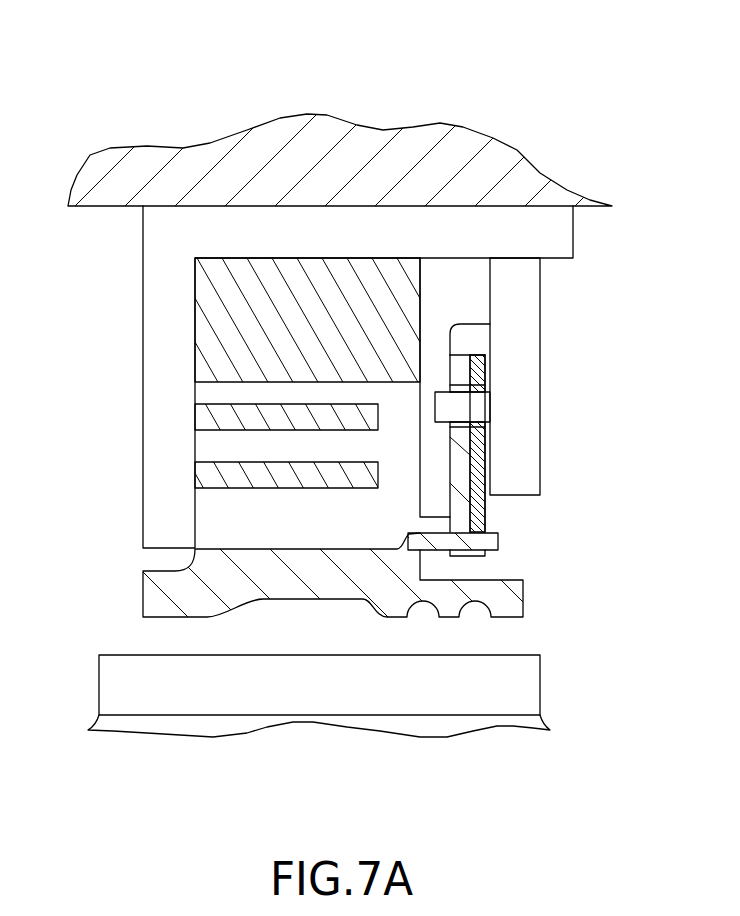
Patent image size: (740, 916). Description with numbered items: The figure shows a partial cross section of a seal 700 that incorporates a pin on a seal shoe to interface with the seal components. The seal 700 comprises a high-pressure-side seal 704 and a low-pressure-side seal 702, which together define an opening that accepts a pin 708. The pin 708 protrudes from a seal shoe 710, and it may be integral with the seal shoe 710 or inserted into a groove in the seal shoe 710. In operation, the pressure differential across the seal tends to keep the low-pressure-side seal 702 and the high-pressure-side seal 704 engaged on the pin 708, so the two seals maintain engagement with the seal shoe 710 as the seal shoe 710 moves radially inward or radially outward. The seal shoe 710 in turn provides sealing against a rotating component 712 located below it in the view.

The seal 700 is at (148, 81).
The low-pressure-side seal 702 is at (458, 452).
The high-pressure-side seal 704 is at (480, 504).
The pin 708 is at (498, 541).
The seal shoe 710 is at (513, 600).
The rotating component 712 is at (528, 683).